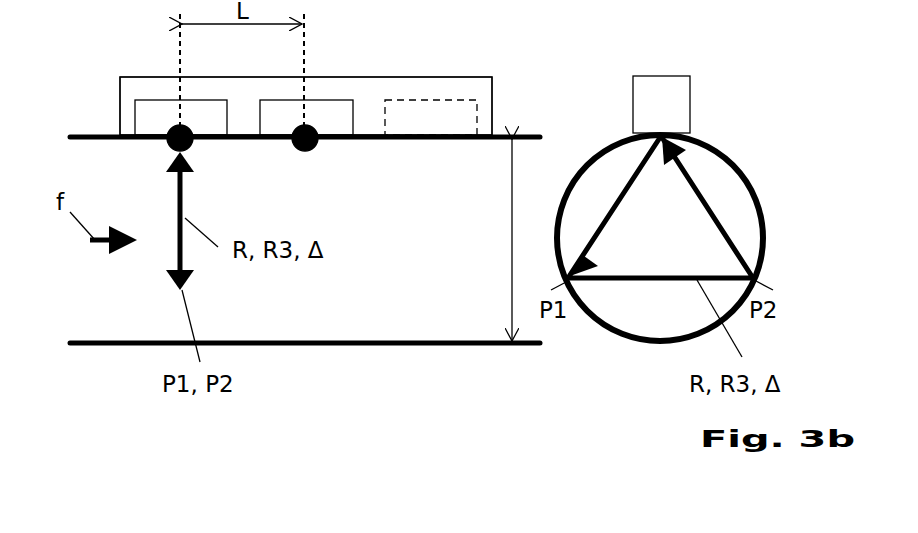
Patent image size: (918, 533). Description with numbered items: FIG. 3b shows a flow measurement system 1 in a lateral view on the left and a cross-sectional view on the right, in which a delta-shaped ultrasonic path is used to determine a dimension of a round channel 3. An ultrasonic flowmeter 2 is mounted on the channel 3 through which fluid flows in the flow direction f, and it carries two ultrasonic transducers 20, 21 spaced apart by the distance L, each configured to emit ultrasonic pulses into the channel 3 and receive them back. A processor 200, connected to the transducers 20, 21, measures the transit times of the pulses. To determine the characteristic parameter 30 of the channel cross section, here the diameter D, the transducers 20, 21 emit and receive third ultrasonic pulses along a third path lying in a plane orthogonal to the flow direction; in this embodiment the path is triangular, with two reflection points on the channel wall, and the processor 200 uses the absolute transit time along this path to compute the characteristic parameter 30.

The flow measurement system 1 is at (78, 56).
The ultrasonic flowmeter 2 is at (120, 108).
The ultrasonic transducer 20 is at (148, 100).
The ultrasonic transducer 21 is at (289, 100).
The processor 200 is at (431, 98).
The channel 3 is at (115, 346).
The characteristic parameter 30 is at (511, 243).